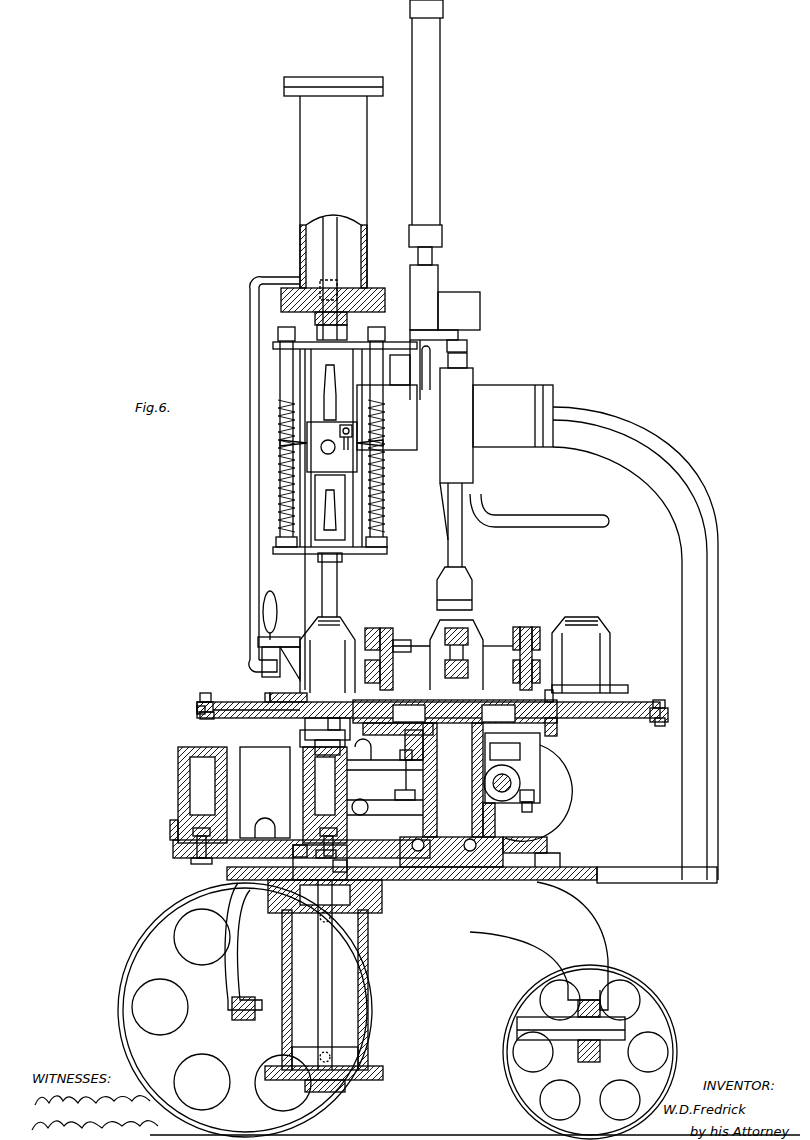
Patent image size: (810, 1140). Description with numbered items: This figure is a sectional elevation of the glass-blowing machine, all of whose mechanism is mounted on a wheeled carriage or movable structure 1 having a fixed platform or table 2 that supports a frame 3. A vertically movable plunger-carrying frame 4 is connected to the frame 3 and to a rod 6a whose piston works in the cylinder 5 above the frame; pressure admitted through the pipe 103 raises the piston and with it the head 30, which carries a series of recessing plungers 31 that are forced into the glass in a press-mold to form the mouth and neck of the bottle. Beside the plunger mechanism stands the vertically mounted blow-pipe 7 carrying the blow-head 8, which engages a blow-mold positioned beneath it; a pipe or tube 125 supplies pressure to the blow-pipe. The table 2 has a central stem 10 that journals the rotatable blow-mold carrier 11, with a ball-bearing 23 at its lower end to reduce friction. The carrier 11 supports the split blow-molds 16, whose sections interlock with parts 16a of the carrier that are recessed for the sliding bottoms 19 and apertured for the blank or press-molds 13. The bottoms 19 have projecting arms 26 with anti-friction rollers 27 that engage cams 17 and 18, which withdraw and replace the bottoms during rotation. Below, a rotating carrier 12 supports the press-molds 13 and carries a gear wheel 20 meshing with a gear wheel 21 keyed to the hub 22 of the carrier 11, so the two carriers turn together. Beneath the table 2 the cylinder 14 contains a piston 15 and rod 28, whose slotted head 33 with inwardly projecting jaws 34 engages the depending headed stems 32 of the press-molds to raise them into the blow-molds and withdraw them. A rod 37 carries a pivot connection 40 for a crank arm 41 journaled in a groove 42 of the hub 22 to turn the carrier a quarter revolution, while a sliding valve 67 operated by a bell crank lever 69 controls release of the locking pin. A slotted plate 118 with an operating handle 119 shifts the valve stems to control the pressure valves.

The carriage or movable structure 1 is at (397, 1010).
The fixed platform or table 2 is at (227, 873).
The frame 3 is at (579, 616).
The plunger-carrying frame 4 is at (352, 448).
The cylinder 5 is at (333, 208).
The rod 6a is at (324, 278).
The blow-pipe 7 is at (451, 525).
The blow-head 8 is at (454, 588).
The central stem 10 is at (453, 780).
The blow-mold carrier 11 is at (428, 714).
The rotating carrier 12 is at (301, 849).
The blank or press-molds 13 is at (262, 795).
The cylinder 14 is at (324, 1001).
The piston 15 is at (325, 1058).
The blow-molds 16 is at (464, 686).
The parts of the carrier 16a is at (454, 712).
The cam 17 is at (230, 714).
The cam 18 is at (197, 710).
The bottoms of the blow-molds 19 is at (268, 698).
The gear wheel 20 is at (172, 838).
The gear wheel 21 is at (547, 838).
The hub 22 is at (483, 818).
The ball-bearing 23 is at (451, 844).
The projecting arms 26 is at (432, 703).
The anti-friction rollers 27 is at (436, 724).
The rod 28 is at (332, 948).
The head 30 is at (332, 447).
The recessing plungers 31 is at (330, 388).
The depending headed stems 32 is at (197, 850).
The slotted head 33 is at (320, 862).
The inwardly projecting jaws 34 is at (328, 861).
The rod 37 is at (512, 783).
The pivot connection 40 is at (540, 738).
The crank arm 41 is at (505, 751).
The groove 42 is at (437, 742).
The sliding valve 67 is at (365, 803).
The bell crank lever 69 is at (408, 775).
The pipe 103 is at (300, 282).
The plate 118 is at (415, 636).
The operating handle 119 is at (276, 612).
The pipe or tube 125 is at (539, 510).